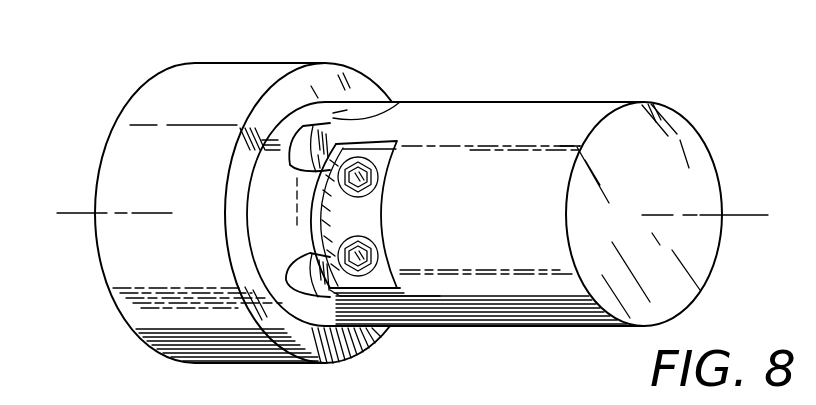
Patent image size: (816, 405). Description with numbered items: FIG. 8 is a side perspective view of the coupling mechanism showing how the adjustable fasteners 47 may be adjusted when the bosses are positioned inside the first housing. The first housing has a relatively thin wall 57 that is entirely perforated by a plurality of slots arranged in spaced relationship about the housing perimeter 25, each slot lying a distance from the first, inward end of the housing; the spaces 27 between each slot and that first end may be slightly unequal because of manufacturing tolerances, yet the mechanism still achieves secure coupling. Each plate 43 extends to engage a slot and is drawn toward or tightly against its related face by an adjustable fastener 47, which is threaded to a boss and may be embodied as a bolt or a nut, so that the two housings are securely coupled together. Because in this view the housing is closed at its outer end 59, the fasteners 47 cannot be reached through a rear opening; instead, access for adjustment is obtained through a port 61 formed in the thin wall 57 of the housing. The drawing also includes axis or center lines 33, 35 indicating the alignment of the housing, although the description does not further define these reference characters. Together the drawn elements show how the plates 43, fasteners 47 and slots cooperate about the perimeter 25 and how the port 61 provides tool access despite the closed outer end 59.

The housing perimeter 25 is at (400, 102).
The spaces between slots and first end 27 is at (338, 358).
The shaft axis 33 is at (752, 216).
The drum axis 35 is at (80, 213).
The plate 43 is at (313, 130).
The adjustable fastener 47 is at (367, 178).
The relatively thin wall 57 is at (560, 117).
The outer end 59 is at (687, 157).
The port 61 is at (394, 289).